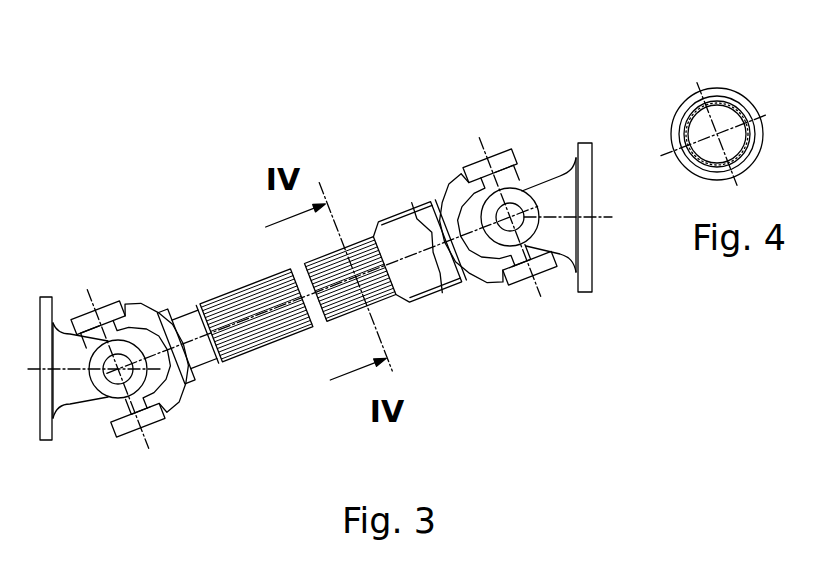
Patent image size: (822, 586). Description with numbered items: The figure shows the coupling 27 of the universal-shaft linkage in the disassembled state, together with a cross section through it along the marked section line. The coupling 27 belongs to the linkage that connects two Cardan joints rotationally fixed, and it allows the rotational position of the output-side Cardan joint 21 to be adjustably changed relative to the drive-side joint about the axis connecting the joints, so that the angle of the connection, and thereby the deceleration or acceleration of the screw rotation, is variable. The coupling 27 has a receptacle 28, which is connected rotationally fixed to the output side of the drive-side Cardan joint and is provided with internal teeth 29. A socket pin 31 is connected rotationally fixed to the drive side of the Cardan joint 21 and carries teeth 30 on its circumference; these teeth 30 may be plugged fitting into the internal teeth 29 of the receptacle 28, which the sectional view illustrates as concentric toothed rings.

In FIG. 3, the Cardan joint 21 is at (116, 350).
In FIG. 3, the coupling 27 is at (282, 352).
In FIG. 3, the receptacle 28 is at (358, 240).
In FIG. 4, the receptacle 28 is at (735, 102).
In FIG. 3, the internal teeth 29 is at (423, 302).
In FIG. 4, the internal teeth 29 is at (690, 112).
In FIG. 3, the teeth 30 is at (252, 280).
In FIG. 3, the socket pin 31 is at (242, 357).